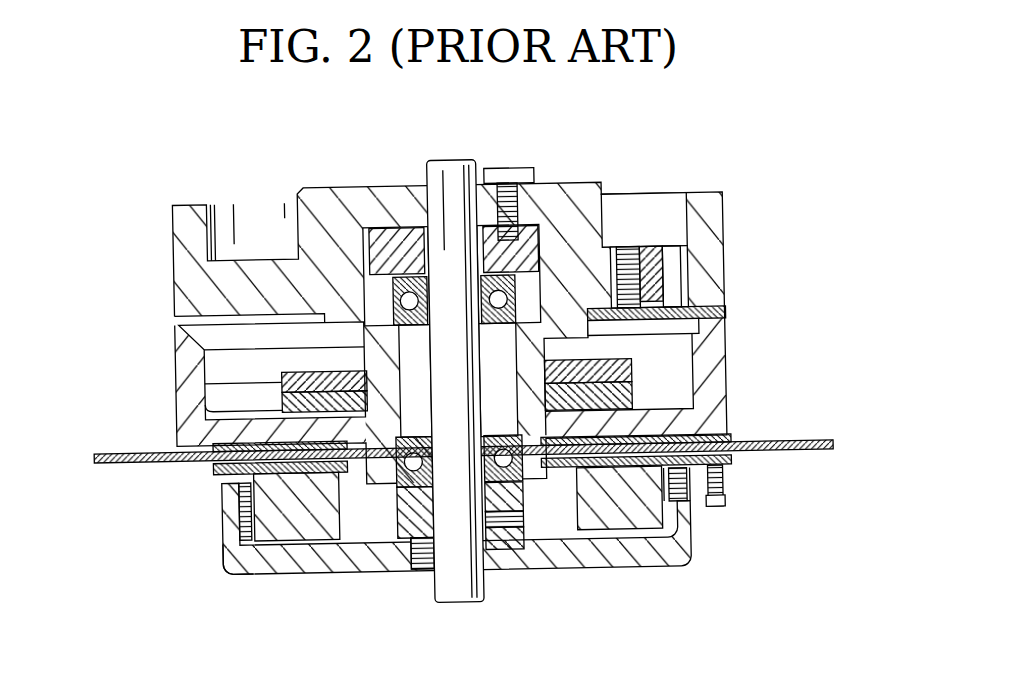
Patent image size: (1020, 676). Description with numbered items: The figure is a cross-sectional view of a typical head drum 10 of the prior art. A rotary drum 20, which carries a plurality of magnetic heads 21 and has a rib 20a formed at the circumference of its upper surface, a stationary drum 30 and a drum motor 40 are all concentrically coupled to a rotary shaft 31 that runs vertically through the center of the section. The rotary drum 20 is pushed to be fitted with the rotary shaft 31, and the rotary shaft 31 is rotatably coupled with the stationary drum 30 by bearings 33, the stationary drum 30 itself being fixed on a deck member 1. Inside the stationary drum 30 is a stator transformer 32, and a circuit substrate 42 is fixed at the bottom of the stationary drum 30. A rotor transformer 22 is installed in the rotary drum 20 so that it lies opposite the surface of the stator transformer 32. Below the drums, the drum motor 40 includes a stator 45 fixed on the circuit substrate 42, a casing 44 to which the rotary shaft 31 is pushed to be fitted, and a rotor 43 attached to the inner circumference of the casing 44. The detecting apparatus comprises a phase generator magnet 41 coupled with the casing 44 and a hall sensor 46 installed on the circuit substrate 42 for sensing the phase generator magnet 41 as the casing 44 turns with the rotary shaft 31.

The deck member 1 is at (807, 447).
The head drum 10 is at (462, 379).
The rotary drum 20 is at (732, 250).
The rib 20a is at (225, 203).
The magnetic heads 21 is at (726, 298).
The rotor transformer 22 is at (212, 378).
The stationary drum 30 is at (732, 376).
The rotary shaft 31 is at (481, 601).
The stator transformer 32 is at (210, 412).
The bearings 33 is at (402, 289).
The drum motor 40 is at (678, 577).
The phase generator (PG) magnet 41 is at (690, 511).
The circuit substrate 42 is at (213, 474).
The rotor 43 is at (232, 523).
The casing 44 is at (229, 564).
The stator 45 is at (307, 532).
The hall sensor 46 is at (700, 502).